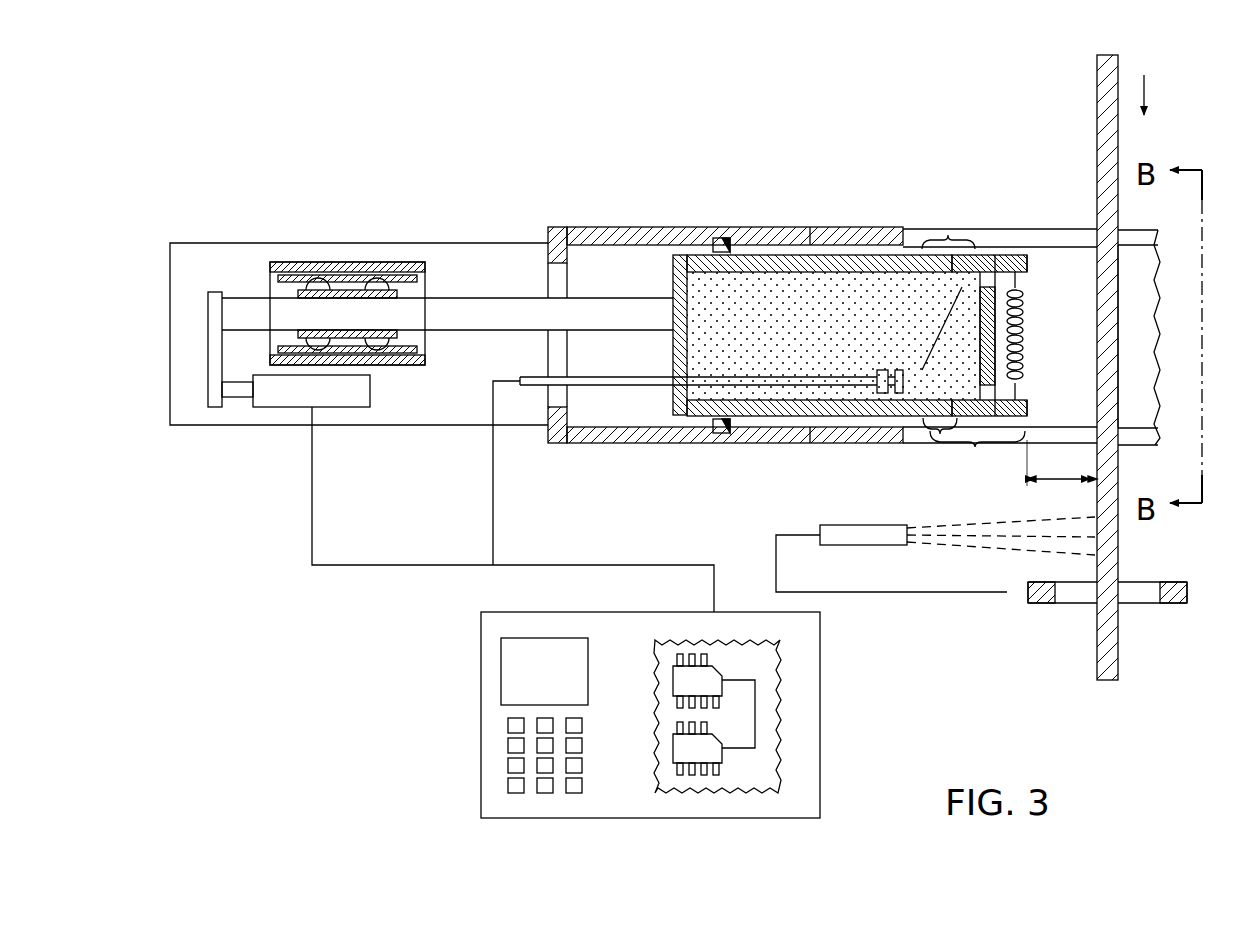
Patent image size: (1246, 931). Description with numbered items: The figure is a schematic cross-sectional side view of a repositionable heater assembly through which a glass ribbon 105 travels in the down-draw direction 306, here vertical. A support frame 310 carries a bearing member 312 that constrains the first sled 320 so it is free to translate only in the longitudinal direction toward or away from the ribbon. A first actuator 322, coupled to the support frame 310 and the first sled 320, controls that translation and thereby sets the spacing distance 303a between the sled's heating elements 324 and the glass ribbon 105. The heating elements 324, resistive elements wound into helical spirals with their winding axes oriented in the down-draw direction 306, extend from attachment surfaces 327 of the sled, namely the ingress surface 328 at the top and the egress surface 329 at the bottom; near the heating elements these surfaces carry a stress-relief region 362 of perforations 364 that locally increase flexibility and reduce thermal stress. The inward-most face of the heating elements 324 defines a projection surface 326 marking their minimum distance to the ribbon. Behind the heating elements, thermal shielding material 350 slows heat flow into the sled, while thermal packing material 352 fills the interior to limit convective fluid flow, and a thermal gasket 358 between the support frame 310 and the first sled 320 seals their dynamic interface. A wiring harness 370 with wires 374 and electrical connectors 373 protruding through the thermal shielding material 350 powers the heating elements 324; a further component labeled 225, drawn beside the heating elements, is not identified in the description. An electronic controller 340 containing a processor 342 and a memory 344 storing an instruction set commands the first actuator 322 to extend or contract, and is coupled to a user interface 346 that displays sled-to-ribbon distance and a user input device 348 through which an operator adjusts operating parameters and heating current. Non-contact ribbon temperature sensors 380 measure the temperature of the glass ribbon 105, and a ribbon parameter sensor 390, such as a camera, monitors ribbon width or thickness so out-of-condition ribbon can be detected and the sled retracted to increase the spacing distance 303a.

The glass ribbon 105 is at (1100, 136).
The down-draw direction 306 is at (1147, 98).
The bearing member 312 is at (312, 262).
The first actuator 322 is at (283, 407).
The support frame 310 is at (787, 228).
The thermal packing material 352 is at (707, 265).
The thermal gasket 358 is at (718, 240).
The first sled 320 is at (908, 246).
The attachment surfaces 327 is at (967, 248).
The egress surface 329 is at (940, 436).
The stress-relief region 362 is at (950, 236).
The ingress surface 328 is at (995, 256).
The perforations 364 is at (1015, 256).
The projection surface 326 is at (1022, 276).
The electrical connectors 373 is at (1023, 374).
The heating elements 324 is at (1024, 320).
The spring 225 is at (981, 341).
The thermal shielding material 350 is at (980, 333).
The wires 374 is at (962, 288).
The wiring harness 370 is at (650, 390).
The spacing distance 303a is at (1065, 485).
The ribbon temperature sensors 380 is at (868, 546).
The ribbon parameter sensor 390 is at (1043, 604).
The electronic controller 340 is at (565, 715).
The user interface 346 is at (501, 655).
The user input device 348 is at (508, 784).
The processor 342 is at (673, 680).
The memory 344 is at (673, 748).